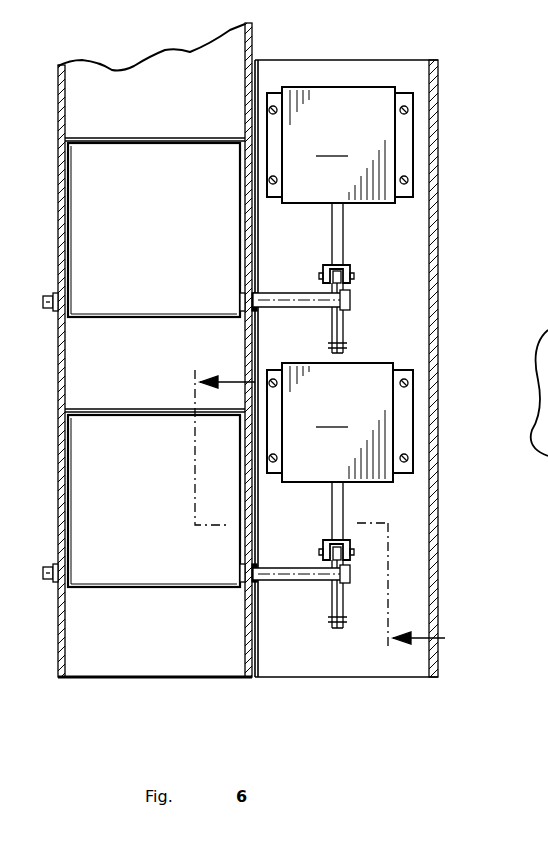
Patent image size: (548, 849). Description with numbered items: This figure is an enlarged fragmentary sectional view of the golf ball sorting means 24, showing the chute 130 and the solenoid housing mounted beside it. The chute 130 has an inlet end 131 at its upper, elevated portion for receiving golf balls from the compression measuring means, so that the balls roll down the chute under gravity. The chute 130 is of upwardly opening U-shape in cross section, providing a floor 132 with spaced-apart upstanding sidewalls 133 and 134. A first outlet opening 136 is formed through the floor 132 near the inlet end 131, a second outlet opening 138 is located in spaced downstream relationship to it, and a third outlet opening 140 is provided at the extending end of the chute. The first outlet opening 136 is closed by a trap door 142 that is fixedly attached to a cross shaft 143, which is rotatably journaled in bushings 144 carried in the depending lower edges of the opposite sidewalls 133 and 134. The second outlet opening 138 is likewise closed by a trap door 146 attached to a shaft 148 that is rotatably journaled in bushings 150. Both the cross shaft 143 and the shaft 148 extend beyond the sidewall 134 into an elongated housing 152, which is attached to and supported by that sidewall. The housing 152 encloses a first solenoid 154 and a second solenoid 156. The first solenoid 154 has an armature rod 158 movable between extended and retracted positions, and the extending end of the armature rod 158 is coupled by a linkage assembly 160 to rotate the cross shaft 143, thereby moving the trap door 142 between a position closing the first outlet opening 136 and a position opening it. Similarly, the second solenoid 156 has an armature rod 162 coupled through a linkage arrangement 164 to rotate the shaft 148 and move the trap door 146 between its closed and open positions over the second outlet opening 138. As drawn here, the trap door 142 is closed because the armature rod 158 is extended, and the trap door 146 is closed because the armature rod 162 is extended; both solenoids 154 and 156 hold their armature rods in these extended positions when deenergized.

The golf ball sorting means 24 is at (445, 644).
The chute 130 is at (135, 367).
The inlet end 131 is at (150, 68).
The floor 132 is at (158, 367).
The sidewall 133 is at (58, 658).
The sidewall 134 is at (245, 658).
The first outlet opening 136 is at (200, 138).
The second outlet opening 138 is at (172, 412).
The third outlet opening 140 is at (166, 655).
The trap door 142 is at (112, 162).
The cross shaft 143 is at (272, 308).
The bushings 144 is at (56, 310).
The trap door 146 is at (120, 440).
The shaft 148 is at (270, 582).
The bushings 150 is at (58, 565).
The housing 152 is at (437, 553).
The first solenoid 154 is at (340, 145).
The second solenoid 156 is at (340, 422).
The armature rod 158 is at (344, 230).
The linkage assembly 160 is at (344, 332).
The armature rod 162 is at (344, 494).
The linkage arrangement 164 is at (344, 595).